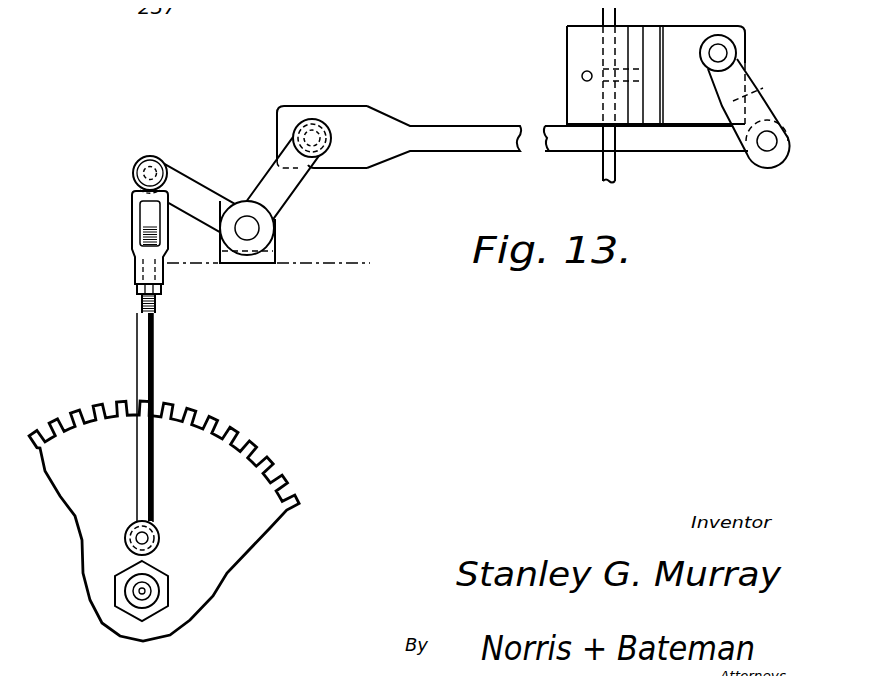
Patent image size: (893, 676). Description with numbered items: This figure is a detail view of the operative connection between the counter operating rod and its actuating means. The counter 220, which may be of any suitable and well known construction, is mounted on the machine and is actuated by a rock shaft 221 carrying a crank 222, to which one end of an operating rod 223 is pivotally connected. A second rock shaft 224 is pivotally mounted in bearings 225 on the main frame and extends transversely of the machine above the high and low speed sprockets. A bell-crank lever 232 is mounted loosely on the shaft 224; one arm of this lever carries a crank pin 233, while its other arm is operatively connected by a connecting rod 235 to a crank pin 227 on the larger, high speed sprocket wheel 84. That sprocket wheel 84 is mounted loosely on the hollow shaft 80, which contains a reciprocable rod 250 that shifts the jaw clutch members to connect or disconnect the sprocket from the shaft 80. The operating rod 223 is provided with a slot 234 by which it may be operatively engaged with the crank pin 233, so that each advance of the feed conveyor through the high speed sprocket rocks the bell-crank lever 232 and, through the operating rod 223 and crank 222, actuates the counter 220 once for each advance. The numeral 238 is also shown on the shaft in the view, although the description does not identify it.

The counter 220 is at (700, 28).
The rock shaft 221 is at (728, 50).
The crank 222 is at (738, 77).
The operating rod 223 is at (493, 146).
The rock shaft 224 is at (247, 227).
The bearings 225 is at (276, 254).
The crank pin 227 is at (148, 538).
The bell-crank lever 232 is at (177, 177).
The crank pin 233 is at (313, 137).
The slot 234 is at (313, 168).
The connecting rod 235 is at (152, 357).
The shaft 238 is at (632, 95).
The shaft 80 is at (152, 585).
The sprocket wheel 84 is at (274, 457).
The rod 250 is at (138, 588).